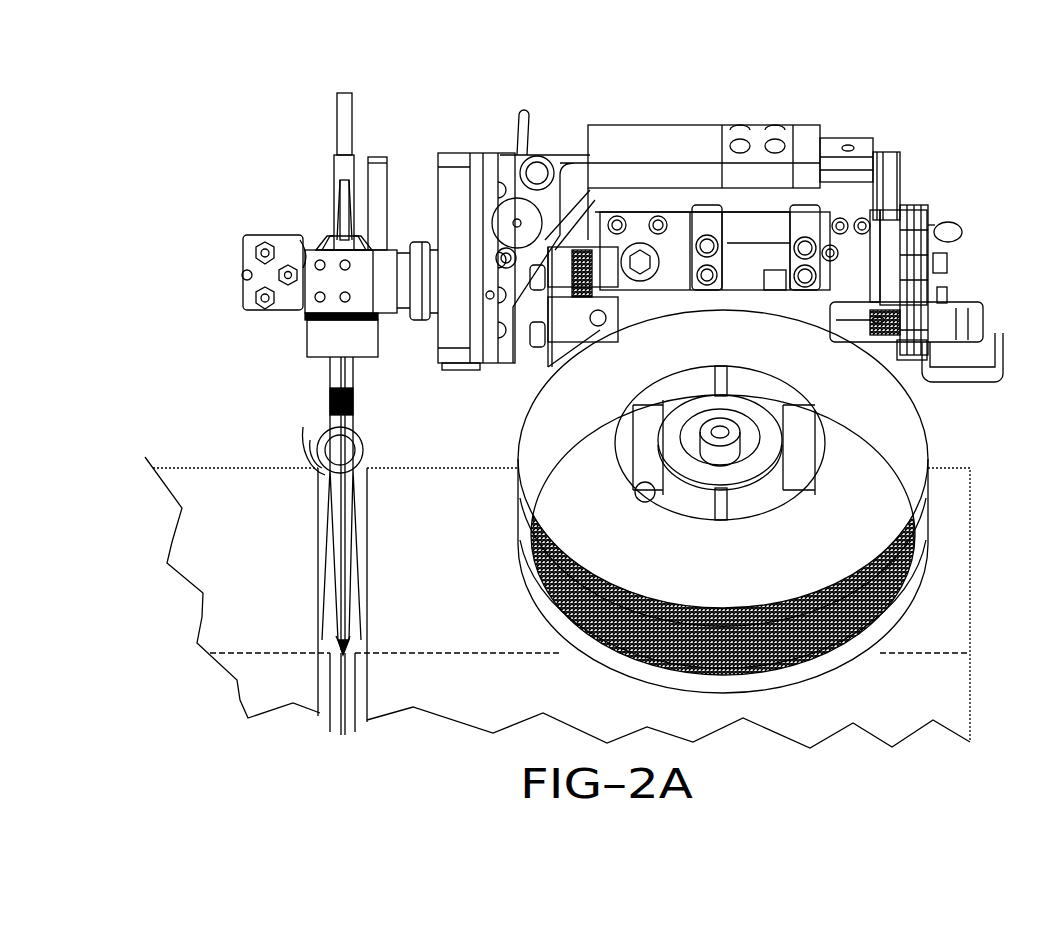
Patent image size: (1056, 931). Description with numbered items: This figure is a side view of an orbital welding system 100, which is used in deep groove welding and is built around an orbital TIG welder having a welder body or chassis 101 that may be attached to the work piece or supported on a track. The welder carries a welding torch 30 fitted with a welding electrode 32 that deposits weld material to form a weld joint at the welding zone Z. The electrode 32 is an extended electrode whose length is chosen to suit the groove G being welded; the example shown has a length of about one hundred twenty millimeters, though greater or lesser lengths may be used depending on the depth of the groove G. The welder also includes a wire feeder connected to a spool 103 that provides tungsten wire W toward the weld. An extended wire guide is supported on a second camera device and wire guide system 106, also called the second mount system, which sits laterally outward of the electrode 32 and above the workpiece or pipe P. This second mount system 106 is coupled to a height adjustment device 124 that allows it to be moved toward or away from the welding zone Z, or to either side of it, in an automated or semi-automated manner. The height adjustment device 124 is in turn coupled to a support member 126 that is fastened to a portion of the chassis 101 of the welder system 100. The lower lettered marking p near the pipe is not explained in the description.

The orbital welding system 100 is at (222, 138).
The welding torch 30 is at (305, 230).
The welder body or chassis 101 is at (455, 190).
The support member 126 is at (395, 232).
The height adjustment device 124 is at (335, 295).
The second camera device and wire guide system 106 is at (312, 440).
The welding electrode 32 is at (338, 575).
The spool 103 is at (893, 440).
The wire W is at (905, 572).
The workpiece or pipe P is at (200, 545).
The lower plate p is at (437, 685).
The groove G is at (320, 678).
The welding zone Z is at (348, 636).